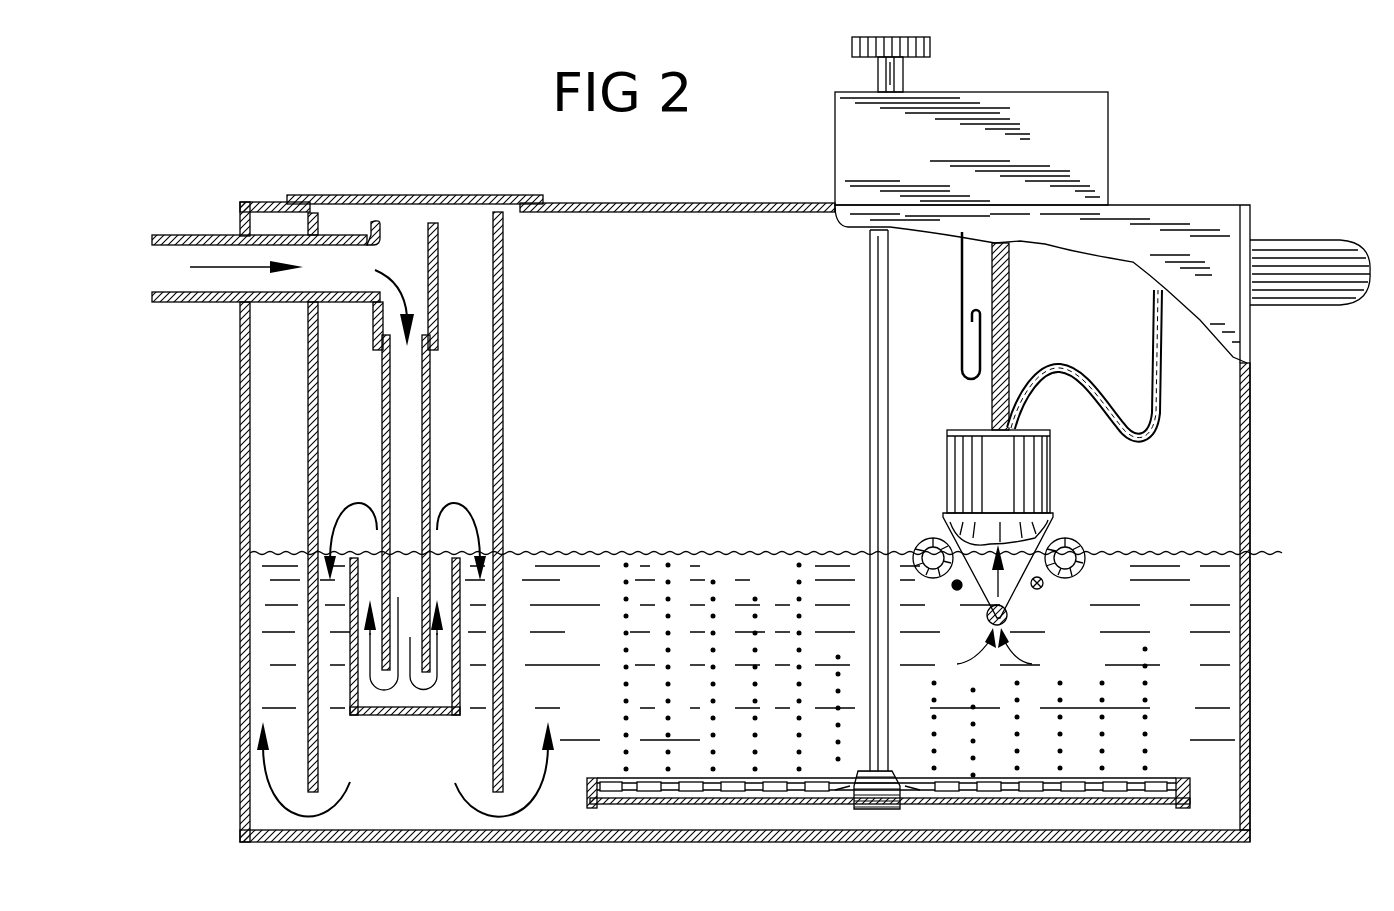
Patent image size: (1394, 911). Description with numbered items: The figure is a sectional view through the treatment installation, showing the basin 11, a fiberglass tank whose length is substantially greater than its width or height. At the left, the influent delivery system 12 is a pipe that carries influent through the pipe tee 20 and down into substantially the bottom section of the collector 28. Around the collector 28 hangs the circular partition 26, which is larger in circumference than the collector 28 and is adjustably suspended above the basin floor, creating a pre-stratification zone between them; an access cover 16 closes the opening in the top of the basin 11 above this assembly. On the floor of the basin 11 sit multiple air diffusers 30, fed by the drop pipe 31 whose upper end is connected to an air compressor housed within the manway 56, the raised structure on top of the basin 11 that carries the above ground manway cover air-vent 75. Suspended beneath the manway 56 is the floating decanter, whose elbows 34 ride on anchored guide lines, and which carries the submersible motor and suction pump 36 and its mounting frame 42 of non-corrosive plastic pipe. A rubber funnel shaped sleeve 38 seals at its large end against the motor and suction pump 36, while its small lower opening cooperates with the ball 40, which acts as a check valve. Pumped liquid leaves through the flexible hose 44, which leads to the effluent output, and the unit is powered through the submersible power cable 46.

The basin 11 is at (1243, 498).
The influent delivery system 12 is at (210, 235).
The access cover 16 is at (362, 196).
The pipe tee 20 is at (437, 312).
The circular partition 26 is at (503, 452).
The collector 28 is at (408, 715).
The air diffusers 30 is at (1019, 786).
The drop pipe 31 is at (871, 403).
The elbows 34 is at (1072, 540).
The submersible motor and suction pump 36 is at (1047, 500).
The funnel shaped sleeve 38 is at (955, 530).
The ball 40 is at (1007, 624).
The mounting frame 42 is at (1042, 586).
The flexible hose 44 is at (1158, 398).
The submersible power cable 46 is at (960, 324).
The manway 56 is at (1100, 148).
The manway cover air-vent 75 is at (930, 43).